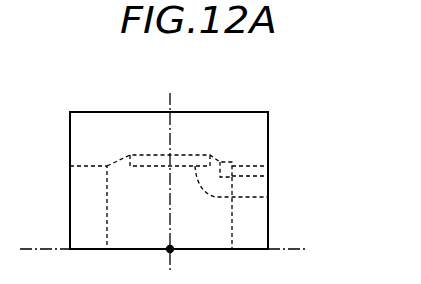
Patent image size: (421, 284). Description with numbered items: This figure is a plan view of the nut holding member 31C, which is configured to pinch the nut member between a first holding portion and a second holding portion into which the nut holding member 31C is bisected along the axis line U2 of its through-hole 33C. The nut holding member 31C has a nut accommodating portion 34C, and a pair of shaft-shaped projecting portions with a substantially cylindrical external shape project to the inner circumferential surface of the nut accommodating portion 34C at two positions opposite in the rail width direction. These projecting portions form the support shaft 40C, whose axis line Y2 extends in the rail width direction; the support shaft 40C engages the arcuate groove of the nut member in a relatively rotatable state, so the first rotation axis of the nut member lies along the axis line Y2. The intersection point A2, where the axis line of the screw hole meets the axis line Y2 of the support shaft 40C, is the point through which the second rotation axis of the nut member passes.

The nut holding member 31C is at (418, 77).
The through-hole 33C is at (82, 168).
The nut accommodating portion 34C is at (268, 176).
The support shaft 40C is at (268, 198).
The axis line Y2 is at (170, 97).
The intersection point A2 is at (172, 252).
The axis line U2 is at (308, 249).